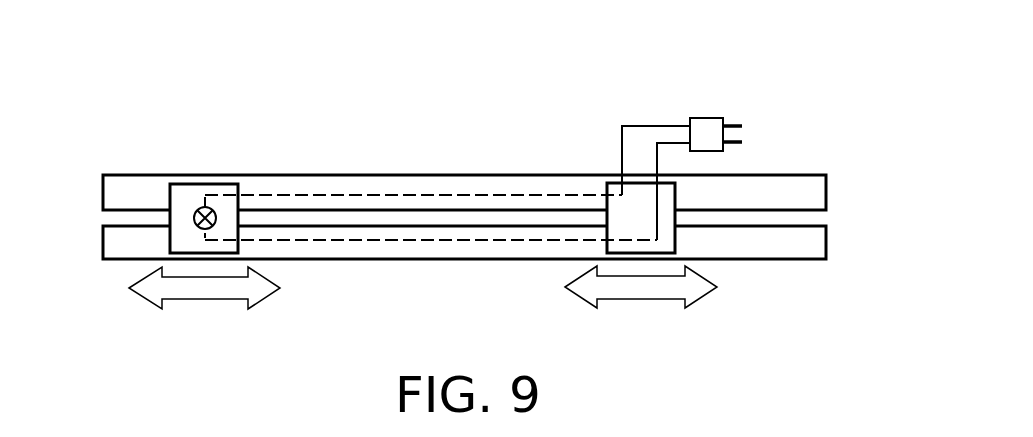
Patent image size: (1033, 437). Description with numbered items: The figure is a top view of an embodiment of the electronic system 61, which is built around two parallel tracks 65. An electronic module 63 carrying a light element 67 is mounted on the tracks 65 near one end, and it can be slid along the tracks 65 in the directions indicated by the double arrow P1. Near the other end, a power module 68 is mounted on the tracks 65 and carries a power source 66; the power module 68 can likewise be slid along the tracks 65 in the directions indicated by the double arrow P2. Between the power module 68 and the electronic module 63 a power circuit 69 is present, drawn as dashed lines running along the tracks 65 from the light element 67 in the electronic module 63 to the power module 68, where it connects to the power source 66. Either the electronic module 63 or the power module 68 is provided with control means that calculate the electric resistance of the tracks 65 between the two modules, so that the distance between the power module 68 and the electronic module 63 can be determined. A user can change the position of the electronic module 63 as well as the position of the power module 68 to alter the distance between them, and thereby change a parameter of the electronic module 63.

The electronic system 61 is at (120, 82).
The electronic module 63 is at (225, 188).
The tracks 65 is at (138, 174).
The power source 66 is at (708, 124).
The light element 67 is at (194, 218).
The power module 68 is at (617, 217).
The power circuit 69 is at (415, 195).
The double arrow P1 is at (200, 293).
The double arrow P2 is at (642, 293).